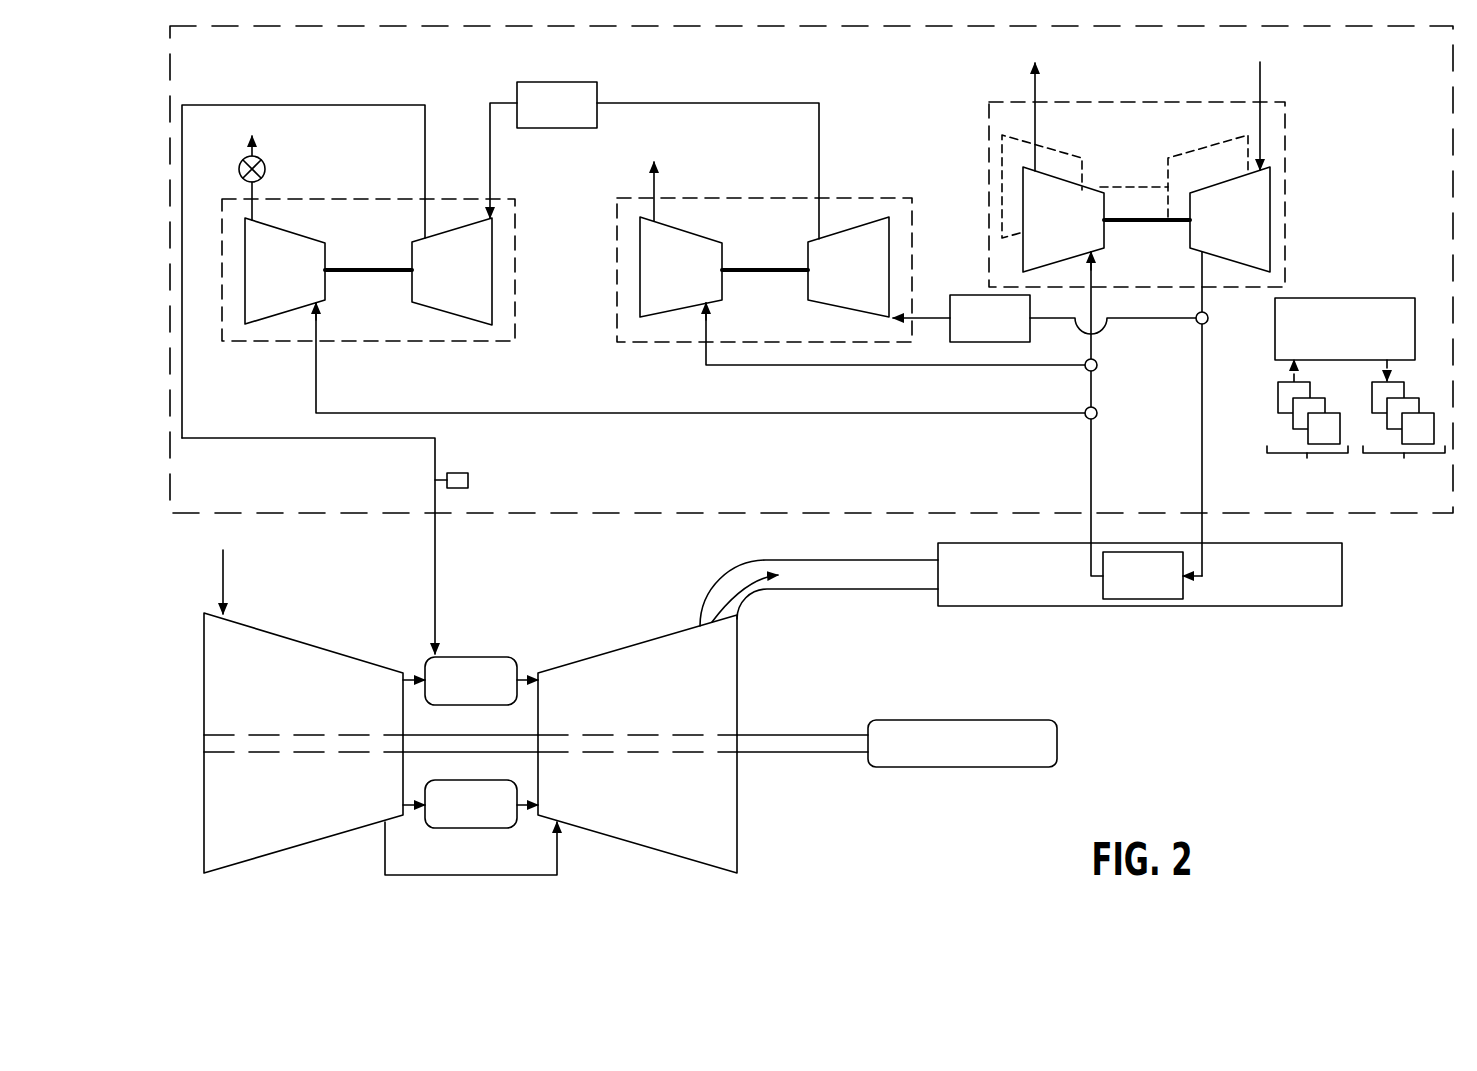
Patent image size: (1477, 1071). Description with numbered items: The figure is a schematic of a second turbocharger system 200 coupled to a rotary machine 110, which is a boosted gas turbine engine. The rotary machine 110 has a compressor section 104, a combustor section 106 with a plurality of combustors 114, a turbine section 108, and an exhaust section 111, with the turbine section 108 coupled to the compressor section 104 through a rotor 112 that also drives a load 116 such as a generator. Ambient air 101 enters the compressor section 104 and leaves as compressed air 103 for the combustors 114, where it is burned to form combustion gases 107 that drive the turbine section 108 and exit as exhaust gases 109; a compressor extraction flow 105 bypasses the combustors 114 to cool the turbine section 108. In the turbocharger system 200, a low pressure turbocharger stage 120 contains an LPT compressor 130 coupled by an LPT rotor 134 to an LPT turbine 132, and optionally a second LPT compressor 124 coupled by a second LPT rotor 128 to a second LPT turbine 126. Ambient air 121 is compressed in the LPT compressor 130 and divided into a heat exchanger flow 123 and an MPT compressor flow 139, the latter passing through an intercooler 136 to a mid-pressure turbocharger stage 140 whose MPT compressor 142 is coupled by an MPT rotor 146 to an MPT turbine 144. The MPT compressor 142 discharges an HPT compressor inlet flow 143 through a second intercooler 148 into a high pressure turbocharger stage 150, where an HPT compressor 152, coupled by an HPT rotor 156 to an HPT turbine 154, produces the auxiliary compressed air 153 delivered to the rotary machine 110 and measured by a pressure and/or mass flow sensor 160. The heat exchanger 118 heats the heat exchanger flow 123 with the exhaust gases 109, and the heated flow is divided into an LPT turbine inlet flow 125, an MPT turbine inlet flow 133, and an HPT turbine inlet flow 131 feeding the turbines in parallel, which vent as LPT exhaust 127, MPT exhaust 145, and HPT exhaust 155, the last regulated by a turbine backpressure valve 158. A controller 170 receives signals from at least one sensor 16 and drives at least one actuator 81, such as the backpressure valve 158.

The sensor 16 is at (1307, 435).
The actuator 81 is at (1404, 435).
The ambient air 101 is at (223, 578).
The compressed air 103 is at (413, 678).
The compressor section 104 is at (256, 632).
The compressor extraction flow 105 is at (448, 875).
The combustor section 106 is at (417, 622).
The combustion gases 107 is at (528, 678).
The turbine section 108 is at (637, 744).
The exhaust gases 109 is at (733, 588).
The rotary machine 110 is at (145, 537).
The exhaust section 111 is at (965, 543).
The rotor 112 is at (448, 735).
The combustor 114 is at (471, 742).
The load 116 is at (962, 743).
The heat exchanger 118 is at (1143, 575).
The low pressure turbocharger stage 120 is at (1280, 101).
The ambient air 121 is at (1260, 100).
The heat exchanger flow 123 is at (1203, 360).
The second LPT compressor 124 is at (1190, 150).
The LPT turbine inlet flow 125 is at (1091, 343).
The second LPT turbine 126 is at (1060, 150).
The LPT exhaust 127 is at (1033, 100).
The second LPT rotor 128 is at (1122, 186).
The LPT compressor 130 is at (1230, 219).
The HPT turbine inlet flow 131 is at (770, 412).
The LPT turbine 132 is at (1063, 219).
The MPT turbine inlet flow 133 is at (938, 366).
The LPT rotor 134 is at (1133, 222).
The intercooler 136 is at (961, 318).
The MPT compressor flow 139 is at (925, 317).
The mid-pressure turbocharger stage 140 is at (888, 197).
The MPT compressor 142 is at (848, 267).
The HPT compressor inlet flow 143 is at (762, 103).
The MPT turbine 144 is at (681, 267).
The MPT exhaust 145 is at (654, 195).
The MPT rotor 146 is at (768, 268).
The second intercooler 148 is at (543, 150).
The high pressure turbocharger stage 150 is at (515, 198).
The HPT compressor 152 is at (452, 271).
The auxiliary compressed air 153 is at (366, 104).
The HPT turbine 154 is at (285, 271).
The HPT exhaust 155 is at (252, 194).
The HPT rotor 156 is at (372, 268).
The turbine backpressure valve 158 is at (261, 166).
The pressure and/or mass flow sensor 160 is at (466, 474).
The controller 170 is at (1345, 329).
The second turbocharger system 200 is at (1350, 514).